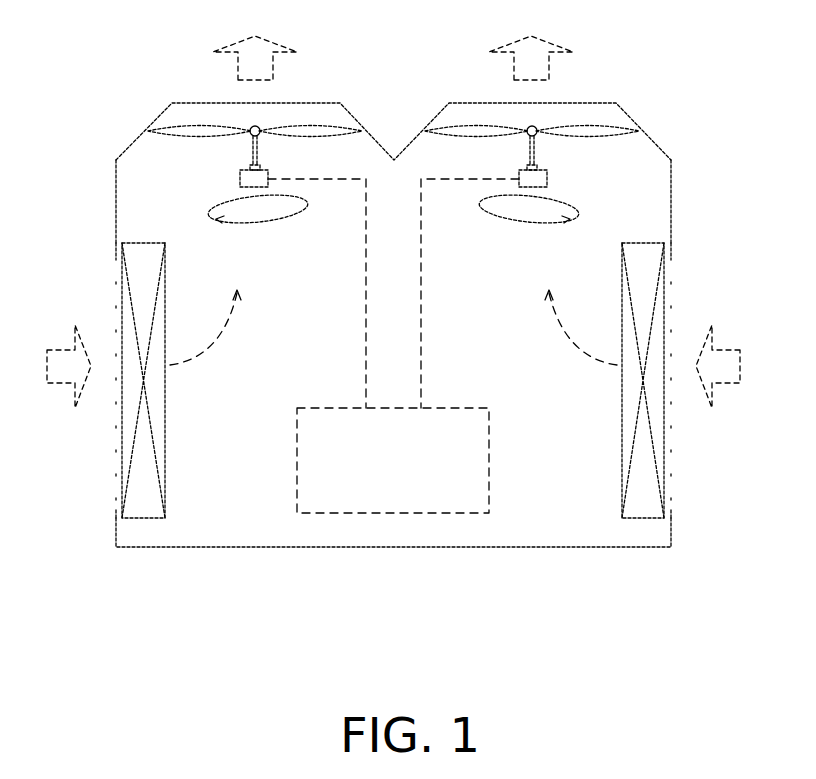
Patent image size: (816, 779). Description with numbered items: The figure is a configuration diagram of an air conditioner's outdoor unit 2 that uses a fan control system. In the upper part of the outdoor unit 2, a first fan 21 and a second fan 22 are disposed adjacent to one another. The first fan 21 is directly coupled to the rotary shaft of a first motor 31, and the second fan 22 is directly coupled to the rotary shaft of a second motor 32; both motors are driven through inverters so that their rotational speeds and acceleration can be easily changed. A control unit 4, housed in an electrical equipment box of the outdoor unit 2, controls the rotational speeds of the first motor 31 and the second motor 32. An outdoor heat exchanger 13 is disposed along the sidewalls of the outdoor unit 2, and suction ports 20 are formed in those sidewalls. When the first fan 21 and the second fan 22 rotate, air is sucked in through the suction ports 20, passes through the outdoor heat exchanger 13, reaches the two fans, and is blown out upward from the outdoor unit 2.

The air conditioner's outdoor unit 2 is at (130, 72).
The first fan 21 is at (160, 128).
The second fan 22 is at (625, 128).
The first motor 31 is at (240, 180).
The second motor 32 is at (546, 180).
The suction ports 20 is at (116, 272).
The outdoor heat exchanger 13 is at (138, 500).
The control unit 4 is at (422, 512).